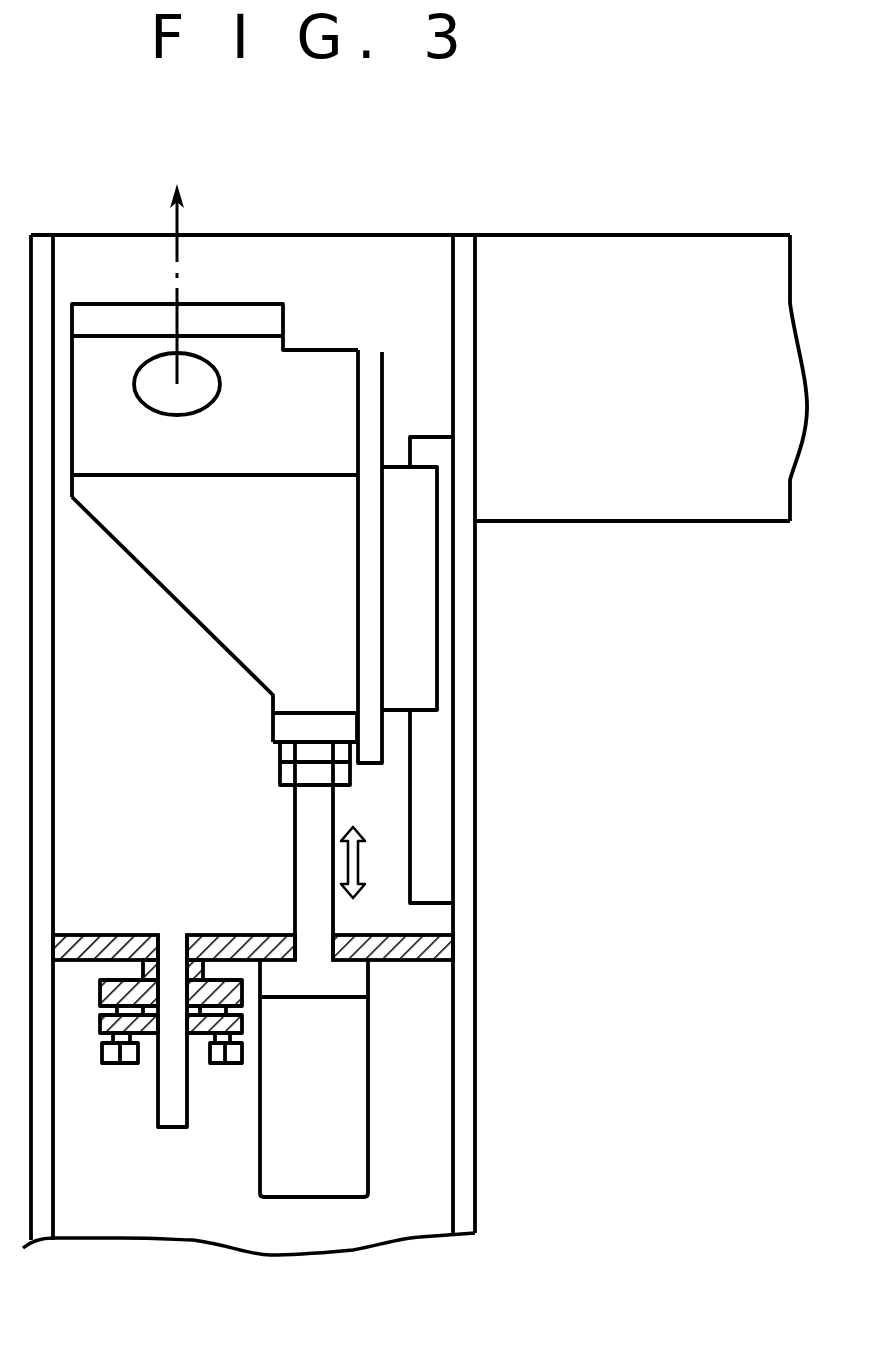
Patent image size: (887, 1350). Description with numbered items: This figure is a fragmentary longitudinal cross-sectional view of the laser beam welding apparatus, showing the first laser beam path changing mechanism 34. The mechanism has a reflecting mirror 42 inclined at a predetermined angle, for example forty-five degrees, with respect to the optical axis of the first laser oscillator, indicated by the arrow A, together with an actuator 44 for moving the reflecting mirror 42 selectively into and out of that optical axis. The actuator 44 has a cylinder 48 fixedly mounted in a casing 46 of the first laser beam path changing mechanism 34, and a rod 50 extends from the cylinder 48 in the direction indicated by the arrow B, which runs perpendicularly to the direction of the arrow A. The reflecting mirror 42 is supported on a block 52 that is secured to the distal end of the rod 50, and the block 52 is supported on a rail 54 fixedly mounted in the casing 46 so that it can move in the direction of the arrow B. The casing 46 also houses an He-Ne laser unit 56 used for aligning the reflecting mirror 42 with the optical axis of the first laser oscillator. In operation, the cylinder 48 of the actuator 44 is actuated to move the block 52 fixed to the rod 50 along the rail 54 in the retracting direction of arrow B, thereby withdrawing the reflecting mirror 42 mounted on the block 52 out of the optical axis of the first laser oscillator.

The first laser beam path changing mechanism 34 is at (419, 210).
The reflecting mirror 42 is at (207, 392).
The actuator 44 is at (424, 1083).
The casing 46 is at (466, 690).
The cylinder 48 is at (313, 1187).
The rod 50 is at (307, 880).
The block 52 is at (185, 547).
The rail 54 is at (435, 807).
The He-Ne laser unit 56 is at (170, 1090).